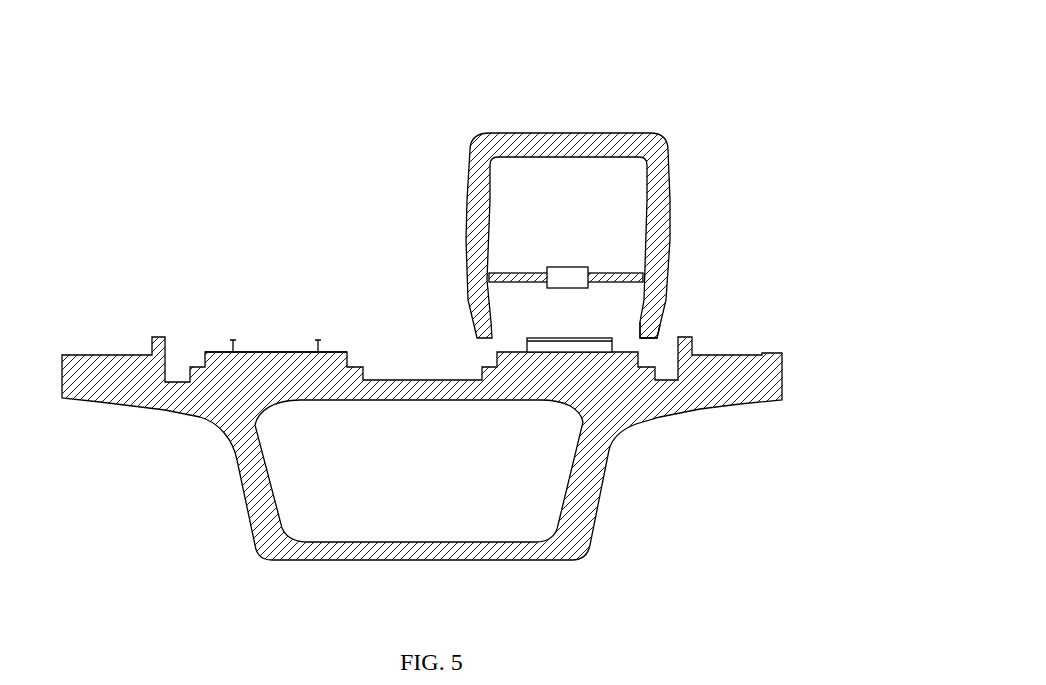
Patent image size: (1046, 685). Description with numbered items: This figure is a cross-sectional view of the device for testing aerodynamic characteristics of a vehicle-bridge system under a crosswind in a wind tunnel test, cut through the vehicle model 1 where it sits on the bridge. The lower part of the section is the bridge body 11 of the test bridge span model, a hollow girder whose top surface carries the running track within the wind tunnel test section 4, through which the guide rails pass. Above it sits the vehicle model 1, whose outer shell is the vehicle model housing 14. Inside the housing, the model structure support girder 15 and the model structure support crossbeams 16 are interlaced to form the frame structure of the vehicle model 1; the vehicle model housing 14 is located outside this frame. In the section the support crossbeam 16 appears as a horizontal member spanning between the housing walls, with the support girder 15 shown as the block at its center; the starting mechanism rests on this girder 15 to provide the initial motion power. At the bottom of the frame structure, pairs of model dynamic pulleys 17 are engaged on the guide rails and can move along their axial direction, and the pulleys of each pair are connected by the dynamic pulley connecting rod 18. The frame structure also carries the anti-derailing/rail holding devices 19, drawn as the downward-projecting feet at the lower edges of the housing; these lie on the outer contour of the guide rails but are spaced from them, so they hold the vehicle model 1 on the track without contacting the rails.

The vehicle model 1 is at (611, 180).
The vehicle model housing 14 is at (665, 181).
The model structure support girder 15 is at (568, 278).
The model structure support crossbeams 16 is at (487, 273).
The model dynamic pulleys 17 is at (522, 341).
The dynamic pulley connecting rod 18 is at (595, 342).
The anti-derailing/rail holding devices 19 is at (660, 325).
The wind tunnel test section 4 is at (220, 335).
The bridge body 11 is at (600, 492).